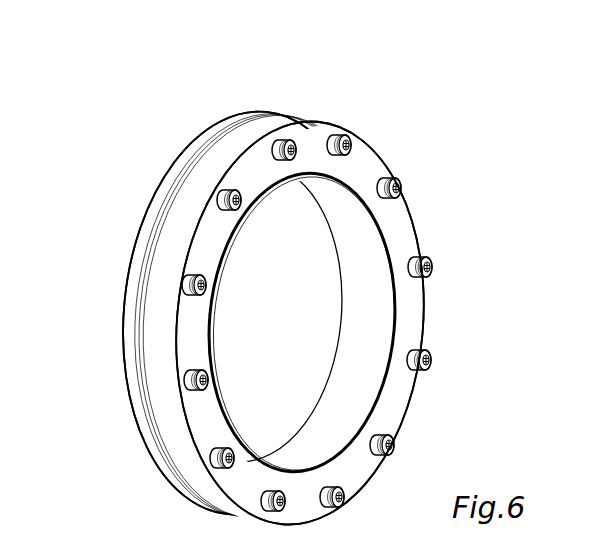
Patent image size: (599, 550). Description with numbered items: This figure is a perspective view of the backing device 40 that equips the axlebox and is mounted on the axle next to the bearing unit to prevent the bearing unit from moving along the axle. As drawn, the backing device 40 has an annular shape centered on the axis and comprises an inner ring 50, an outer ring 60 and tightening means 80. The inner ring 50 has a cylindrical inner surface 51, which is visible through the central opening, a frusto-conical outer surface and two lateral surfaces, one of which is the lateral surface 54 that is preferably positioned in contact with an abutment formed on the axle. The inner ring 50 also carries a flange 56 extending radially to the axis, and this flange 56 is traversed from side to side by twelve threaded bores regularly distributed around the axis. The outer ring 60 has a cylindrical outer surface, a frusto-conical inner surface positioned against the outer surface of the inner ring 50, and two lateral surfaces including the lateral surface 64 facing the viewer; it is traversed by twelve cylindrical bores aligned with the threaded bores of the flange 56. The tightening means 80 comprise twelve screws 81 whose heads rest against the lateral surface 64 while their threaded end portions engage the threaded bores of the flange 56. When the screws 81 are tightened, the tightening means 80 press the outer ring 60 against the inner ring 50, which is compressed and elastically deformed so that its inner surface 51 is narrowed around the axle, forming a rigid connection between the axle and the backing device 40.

The backing device 40 is at (145, 178).
The inner ring 50 is at (130, 328).
The cylindrical inner surface 51 is at (358, 328).
The lateral surface 54 is at (398, 293).
The flange 56 is at (225, 122).
The outer ring 60 is at (163, 387).
The lateral surface 64 is at (400, 223).
The tightening means 80 is at (315, 113).
The screws 81 is at (403, 182).